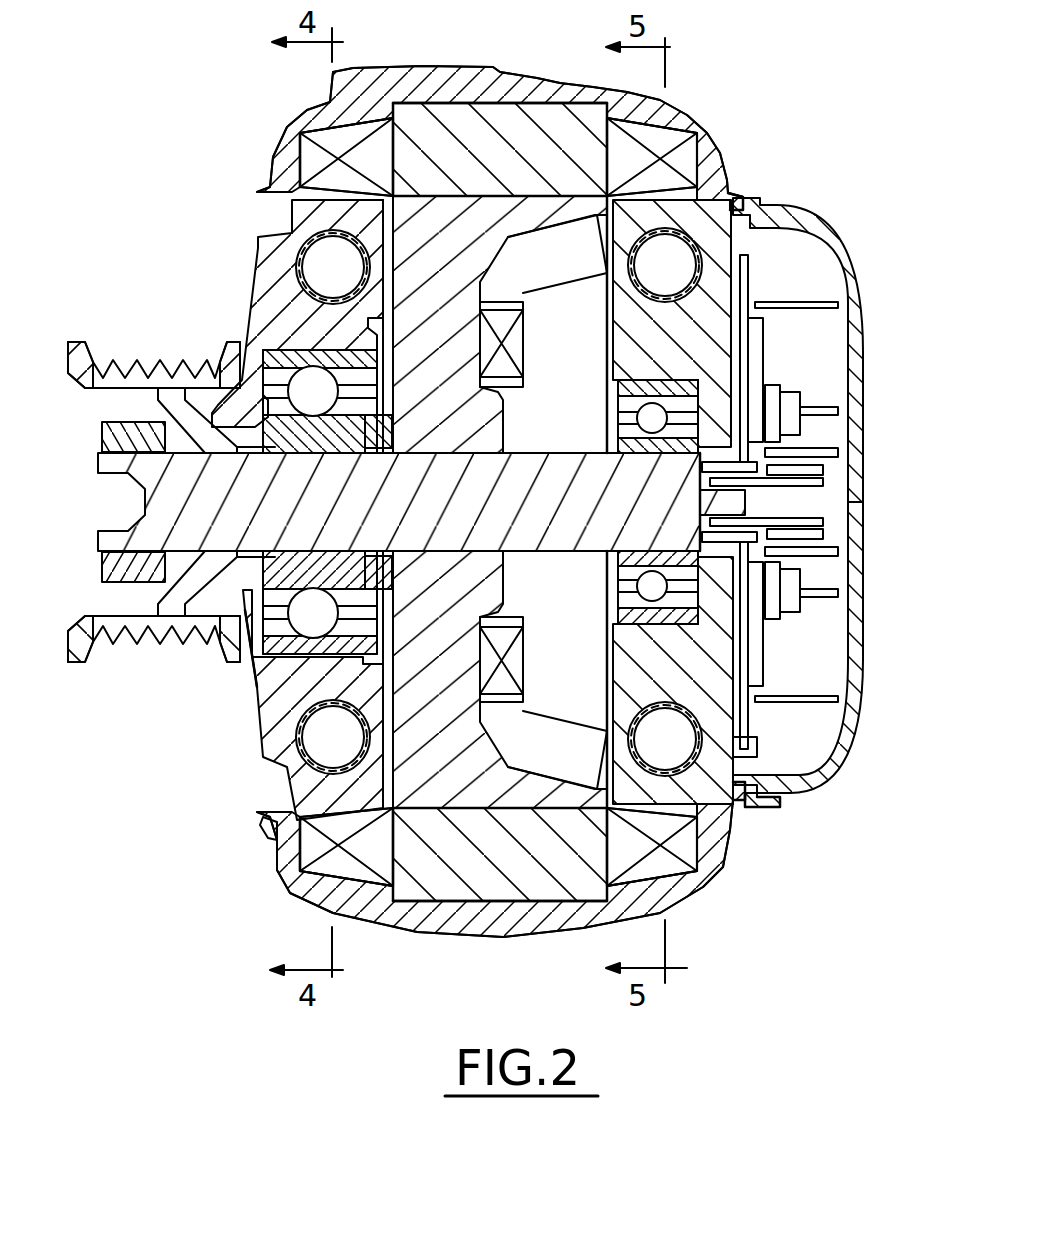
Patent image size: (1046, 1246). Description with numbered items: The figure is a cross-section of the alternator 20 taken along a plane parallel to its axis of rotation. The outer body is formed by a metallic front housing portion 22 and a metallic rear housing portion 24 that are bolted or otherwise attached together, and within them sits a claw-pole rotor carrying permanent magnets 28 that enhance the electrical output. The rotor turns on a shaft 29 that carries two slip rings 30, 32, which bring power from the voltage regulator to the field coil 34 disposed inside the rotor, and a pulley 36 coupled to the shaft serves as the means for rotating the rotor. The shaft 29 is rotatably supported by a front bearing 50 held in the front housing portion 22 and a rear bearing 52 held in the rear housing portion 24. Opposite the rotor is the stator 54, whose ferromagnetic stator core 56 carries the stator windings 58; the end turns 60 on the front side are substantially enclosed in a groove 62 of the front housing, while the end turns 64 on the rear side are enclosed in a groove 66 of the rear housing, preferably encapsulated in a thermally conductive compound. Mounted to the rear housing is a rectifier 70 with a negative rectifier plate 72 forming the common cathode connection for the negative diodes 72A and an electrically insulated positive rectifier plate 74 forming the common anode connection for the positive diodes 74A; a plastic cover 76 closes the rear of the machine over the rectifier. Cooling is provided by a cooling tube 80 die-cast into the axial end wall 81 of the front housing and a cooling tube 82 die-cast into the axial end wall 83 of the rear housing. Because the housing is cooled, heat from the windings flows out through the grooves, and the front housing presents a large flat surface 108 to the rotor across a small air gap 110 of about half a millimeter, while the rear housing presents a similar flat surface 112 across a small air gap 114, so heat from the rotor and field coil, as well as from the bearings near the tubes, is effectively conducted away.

The alternator 20 is at (305, 105).
The front housing portion 22 is at (380, 120).
The rear housing portion 24 is at (573, 83).
The permanent magnets 28 is at (545, 268).
The shaft 29 is at (140, 515).
The slip ring 30 is at (700, 467).
The slip ring 32 is at (800, 470).
The field coil 34 is at (482, 322).
The pulley 36 is at (130, 342).
The front bearing 50 is at (320, 455).
The rear bearing 52 is at (616, 393).
The stator 54 is at (457, 117).
The stator core 56 is at (517, 123).
The stator windings 58 is at (335, 125).
The end turns 60 is at (360, 130).
The groove 62 is at (300, 151).
The end turns 64 is at (636, 162).
The groove 66 is at (648, 214).
The rectifier 70 is at (765, 345).
The negative rectifier plate 72 is at (750, 755).
The negative diodes 72A is at (783, 303).
The positive rectifier plate 74 is at (768, 565).
The positive diodes 74A is at (817, 407).
The plastic cover 76 is at (837, 232).
The cooling tube 80 is at (320, 280).
The axial end wall 81 is at (260, 727).
The cooling tube 82 is at (652, 278).
The axial end wall 83 is at (745, 770).
The flat surface 108 is at (398, 245).
The air gap 110 is at (290, 204).
The flat surface 112 is at (613, 317).
The air gap 114 is at (728, 185).